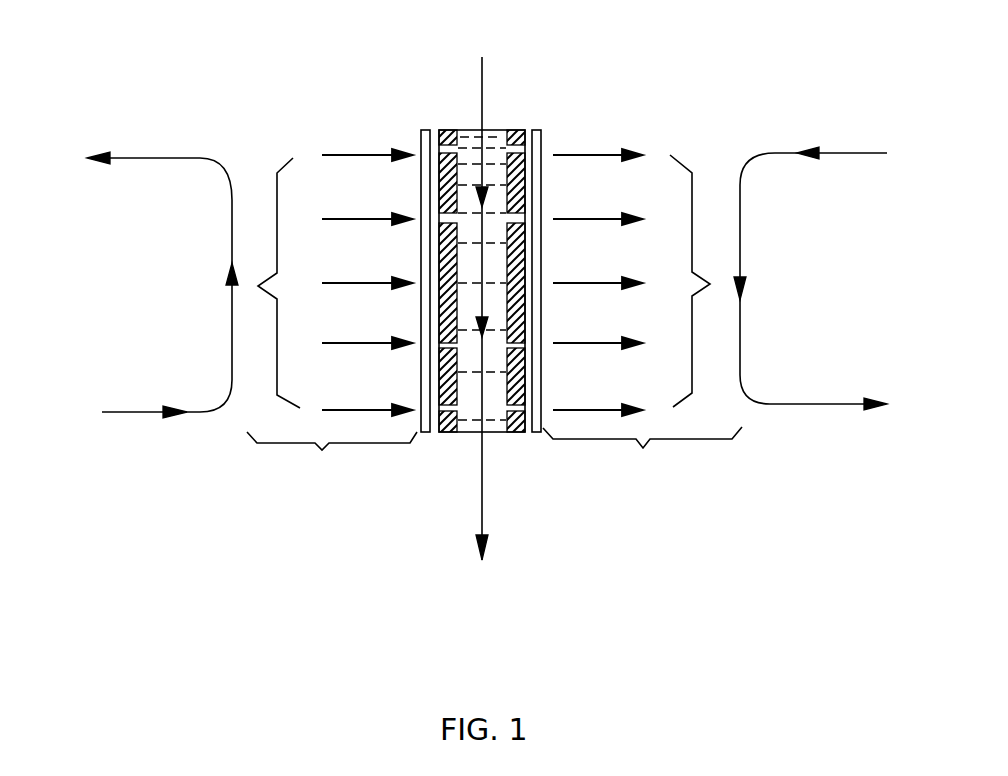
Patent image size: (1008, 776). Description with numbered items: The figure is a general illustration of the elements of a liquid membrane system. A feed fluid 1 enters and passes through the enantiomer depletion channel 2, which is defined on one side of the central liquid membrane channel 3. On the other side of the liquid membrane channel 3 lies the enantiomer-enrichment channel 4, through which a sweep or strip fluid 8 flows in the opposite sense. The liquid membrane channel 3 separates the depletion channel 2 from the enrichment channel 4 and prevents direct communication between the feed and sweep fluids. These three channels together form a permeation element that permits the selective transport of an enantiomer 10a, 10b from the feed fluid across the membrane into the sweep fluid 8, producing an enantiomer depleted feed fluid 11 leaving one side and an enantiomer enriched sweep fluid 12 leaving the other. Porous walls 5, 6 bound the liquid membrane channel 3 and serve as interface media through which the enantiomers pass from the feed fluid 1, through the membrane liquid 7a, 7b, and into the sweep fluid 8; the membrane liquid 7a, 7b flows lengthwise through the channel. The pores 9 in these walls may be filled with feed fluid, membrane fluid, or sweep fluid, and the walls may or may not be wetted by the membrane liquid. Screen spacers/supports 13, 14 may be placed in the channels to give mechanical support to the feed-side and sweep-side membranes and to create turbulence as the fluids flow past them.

The feed fluid 1 is at (159, 348).
The enantiomer depletion channel 2 is at (332, 326).
The liquid membrane channel 3 is at (467, 128).
The second flow chamber 4 is at (642, 324).
The porous wall 5 is at (442, 130).
The porous wall 6 is at (517, 130).
The membrane liquid 7a is at (472, 177).
The membrane liquid 7b is at (482, 467).
The sweep fluid 8 is at (823, 220).
The pores 9 is at (508, 402).
The enantiomer 10a is at (364, 282).
The enantiomer 10b is at (596, 282).
The enantiomer depleted feed fluid 11 is at (145, 214).
The enantiomer enriched sweep fluid 12 is at (838, 364).
The screen spacer/support 13 is at (422, 363).
The screen spacer/support 14 is at (542, 363).